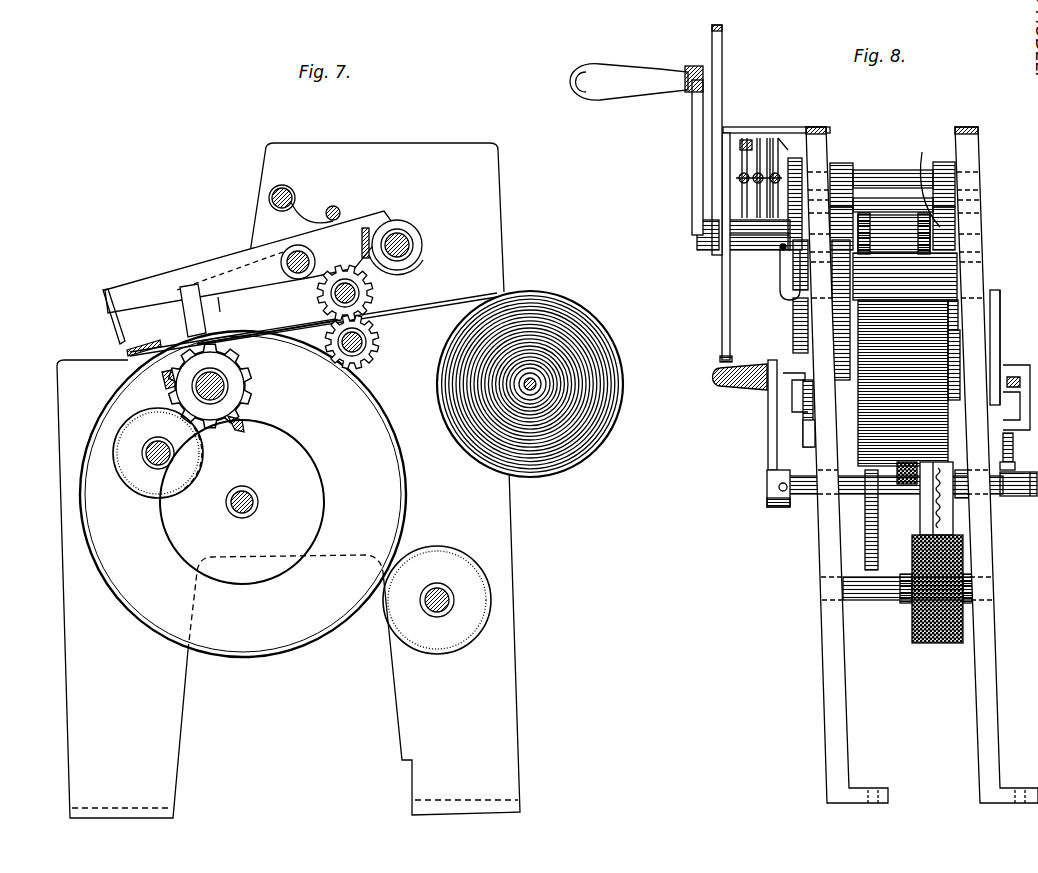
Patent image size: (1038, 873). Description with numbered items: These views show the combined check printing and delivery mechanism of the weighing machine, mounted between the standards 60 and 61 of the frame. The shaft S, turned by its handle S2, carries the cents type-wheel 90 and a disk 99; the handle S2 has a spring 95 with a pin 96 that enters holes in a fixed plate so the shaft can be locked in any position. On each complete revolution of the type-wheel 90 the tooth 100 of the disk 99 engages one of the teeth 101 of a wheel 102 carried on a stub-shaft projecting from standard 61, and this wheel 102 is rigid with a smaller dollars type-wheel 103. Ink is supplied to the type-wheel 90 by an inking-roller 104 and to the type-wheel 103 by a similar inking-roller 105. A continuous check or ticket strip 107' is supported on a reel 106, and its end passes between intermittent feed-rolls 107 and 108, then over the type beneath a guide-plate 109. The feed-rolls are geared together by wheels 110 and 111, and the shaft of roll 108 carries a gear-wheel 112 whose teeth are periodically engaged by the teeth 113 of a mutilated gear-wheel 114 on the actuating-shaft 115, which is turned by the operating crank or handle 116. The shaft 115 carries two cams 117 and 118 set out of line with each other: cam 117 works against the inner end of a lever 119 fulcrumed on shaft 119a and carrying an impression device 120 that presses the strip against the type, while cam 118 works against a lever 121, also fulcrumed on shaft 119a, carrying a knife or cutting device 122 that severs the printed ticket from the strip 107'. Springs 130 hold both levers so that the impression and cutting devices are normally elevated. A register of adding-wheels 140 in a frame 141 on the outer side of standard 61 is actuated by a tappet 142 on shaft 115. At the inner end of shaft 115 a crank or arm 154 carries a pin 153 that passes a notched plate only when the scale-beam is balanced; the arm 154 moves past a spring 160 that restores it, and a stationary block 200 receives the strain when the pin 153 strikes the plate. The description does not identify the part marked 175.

In FIG. 7, the standard 60 is at (498, 720).
In FIG. 8, the standard 60 is at (990, 728).
In FIG. 8, the standard 61 is at (842, 733).
In FIG. 7, the cents type-wheel 90 is at (402, 490).
In FIG. 8, the cents type-wheel 90 is at (955, 513).
In FIG. 8, the spring 95 is at (715, 383).
In FIG. 8, the pin 96 is at (786, 380).
In FIG. 7, the disk 99 is at (317, 472).
In FIG. 8, the disk 99 is at (875, 522).
In FIG. 7, the tooth 100 is at (238, 424).
In FIG. 7, the teeth 101 is at (250, 383).
In FIG. 7, the wheel 102 is at (232, 395).
In FIG. 7, the type-wheel 103 is at (172, 390).
In FIG. 7, the inking-roller 104 is at (437, 560).
In FIG. 8, the inking-roller 104 is at (943, 630).
In FIG. 7, the inking-roller 105 is at (132, 473).
In FIG. 8, the inking-roller 105 is at (903, 470).
In FIG. 7, the roller or reel 106 is at (530, 393).
In FIG. 8, the roller or reel 106 is at (952, 387).
In FIG. 8, the feed-roll 107 is at (942, 270).
In FIG. 7, the check or ticket strip 107' is at (313, 324).
In FIG. 8, the check or ticket strip 107' is at (978, 364).
In FIG. 8, the feed-roll 108 is at (952, 327).
In FIG. 7, the guide-plate 109 is at (252, 329).
In FIG. 7, the wheel 110 is at (362, 293).
In FIG. 8, the wheel 110 is at (835, 290).
In FIG. 7, the wheel 111 is at (372, 345).
In FIG. 8, the wheel 111 is at (833, 338).
In FIG. 8, the gear-wheel 112 is at (793, 353).
In FIG. 8, the teeth 113 is at (793, 160).
In FIG. 8, the mutilated gear-wheel 114 is at (797, 273).
In FIG. 7, the actuating-shaft 115 is at (408, 245).
In FIG. 8, the actuating-shaft 115 is at (730, 247).
In FIG. 8, the operating crank or handle 116 is at (614, 83).
In FIG. 7, the cam 117 is at (410, 267).
In FIG. 8, the cam 117 is at (922, 152).
In FIG. 7, the cam 118 is at (399, 221).
In FIG. 8, the cam 118 is at (847, 223).
In FIG. 7, the lever 119 is at (220, 303).
In FIG. 8, the lever 119 is at (943, 200).
In FIG. 7, the shaft 119a is at (297, 251).
In FIG. 8, the shaft 119a is at (890, 237).
In FIG. 7, the impression device 120 is at (187, 323).
In FIG. 7, the lever 121 is at (162, 281).
In FIG. 7, the knife or cutting device 122 is at (120, 327).
In FIG. 7, the springs 130 is at (309, 214).
In FIG. 8, the springs 130 is at (945, 165).
In FIG. 8, the adding-wheels 140 is at (747, 203).
In FIG. 8, the frame 141 is at (780, 147).
In FIG. 8, the tappet 142 is at (783, 248).
In FIG. 8, the pin 153 is at (1007, 447).
In FIG. 8, the crank or arm 154 is at (1000, 330).
In FIG. 8, the spring 160 is at (1006, 466).
In FIG. 8, the crank arm 175 is at (721, 43).
In FIG. 8, the stationary block or resisting device 200 is at (1002, 347).
In FIG. 7, the shaft S is at (243, 512).
In FIG. 8, the shaft S is at (810, 494).
In FIG. 8, the handle S2 is at (730, 387).